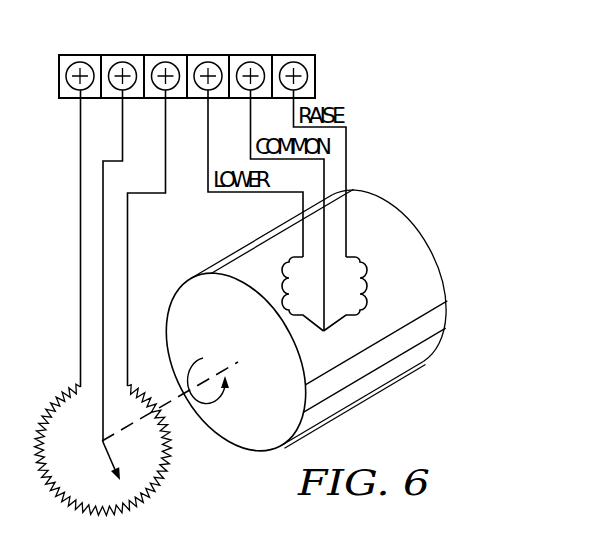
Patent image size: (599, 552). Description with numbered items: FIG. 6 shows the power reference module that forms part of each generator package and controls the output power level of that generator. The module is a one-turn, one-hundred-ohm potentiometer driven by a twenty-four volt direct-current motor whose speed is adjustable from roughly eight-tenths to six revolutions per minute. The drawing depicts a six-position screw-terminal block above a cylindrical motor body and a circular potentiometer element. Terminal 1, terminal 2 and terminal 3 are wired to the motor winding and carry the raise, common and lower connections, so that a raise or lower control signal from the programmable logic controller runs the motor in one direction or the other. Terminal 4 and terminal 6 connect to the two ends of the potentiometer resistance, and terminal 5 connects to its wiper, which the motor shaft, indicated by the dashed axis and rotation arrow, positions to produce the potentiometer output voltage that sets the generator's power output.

The terminal 1 (raise) 1 is at (294, 60).
The terminal 2 (common) 2 is at (251, 60).
The terminal 3 (lower) 3 is at (208, 60).
The terminal 4 (potentiometer end) 4 is at (166, 60).
The terminal 5 (potentiometer wiper) 5 is at (123, 60).
The terminal 6 (potentiometer end) 6 is at (80, 60).